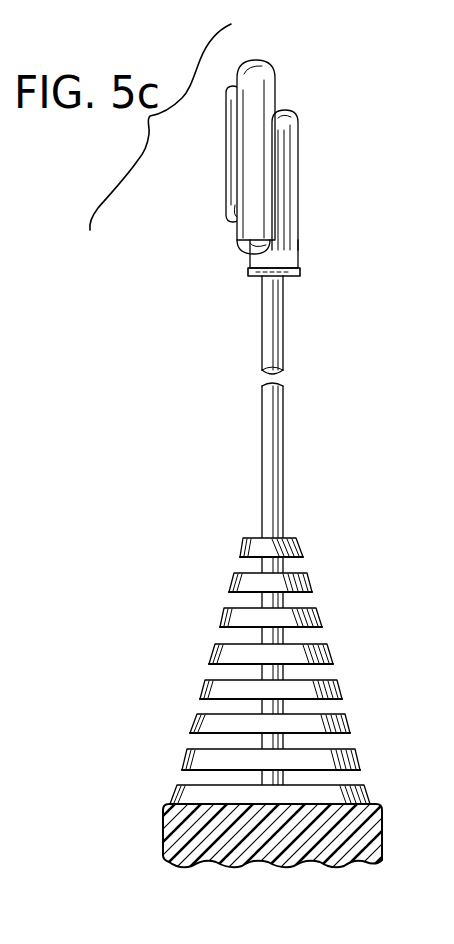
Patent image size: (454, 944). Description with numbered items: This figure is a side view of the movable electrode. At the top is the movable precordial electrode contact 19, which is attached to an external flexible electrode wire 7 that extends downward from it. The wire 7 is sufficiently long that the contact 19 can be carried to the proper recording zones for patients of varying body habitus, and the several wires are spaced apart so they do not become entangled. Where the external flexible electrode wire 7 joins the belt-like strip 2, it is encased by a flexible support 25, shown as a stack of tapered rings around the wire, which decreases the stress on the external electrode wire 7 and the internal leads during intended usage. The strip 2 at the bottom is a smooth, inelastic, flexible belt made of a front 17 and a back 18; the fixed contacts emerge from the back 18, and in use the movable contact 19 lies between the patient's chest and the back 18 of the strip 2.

The movable precordial electrode contact 19 is at (273, 159).
The external flexible electrode wire 7 is at (283, 327).
The flexible support 25 is at (310, 586).
The belt-like strip 2 is at (348, 843).
The back 18 is at (163, 828).
The front 17 is at (382, 827).